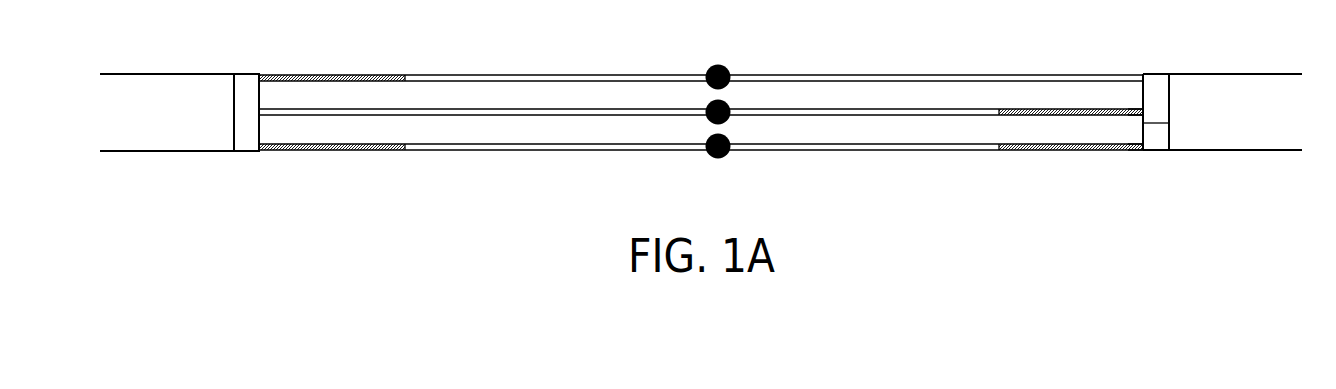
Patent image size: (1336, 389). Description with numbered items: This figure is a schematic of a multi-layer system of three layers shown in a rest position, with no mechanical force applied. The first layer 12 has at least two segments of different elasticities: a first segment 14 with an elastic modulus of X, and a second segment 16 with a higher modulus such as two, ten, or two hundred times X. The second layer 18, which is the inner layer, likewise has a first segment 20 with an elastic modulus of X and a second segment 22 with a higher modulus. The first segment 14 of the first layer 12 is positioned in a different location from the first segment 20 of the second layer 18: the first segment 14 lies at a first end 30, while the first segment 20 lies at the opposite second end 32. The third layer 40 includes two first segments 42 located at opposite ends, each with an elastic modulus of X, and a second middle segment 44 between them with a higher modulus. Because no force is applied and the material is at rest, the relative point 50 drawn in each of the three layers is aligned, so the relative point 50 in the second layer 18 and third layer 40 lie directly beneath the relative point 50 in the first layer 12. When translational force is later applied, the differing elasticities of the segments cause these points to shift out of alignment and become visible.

The first layer 12 is at (1135, 75).
The first segment of the first layer 14 is at (335, 75).
The second segment of the first layer 16 is at (862, 75).
The second layer 18 is at (1133, 109).
The first segment of the second layer 20 is at (1055, 109).
The second segment of the second layer 22 is at (557, 109).
The first end 30 is at (259, 100).
The second end 32 is at (1169, 123).
The third layer 40 is at (1136, 150).
The first segments of the third layer 42 is at (322, 150).
The second middle segment of the third layer 44 is at (838, 150).
The relative point 50 is at (706, 85).